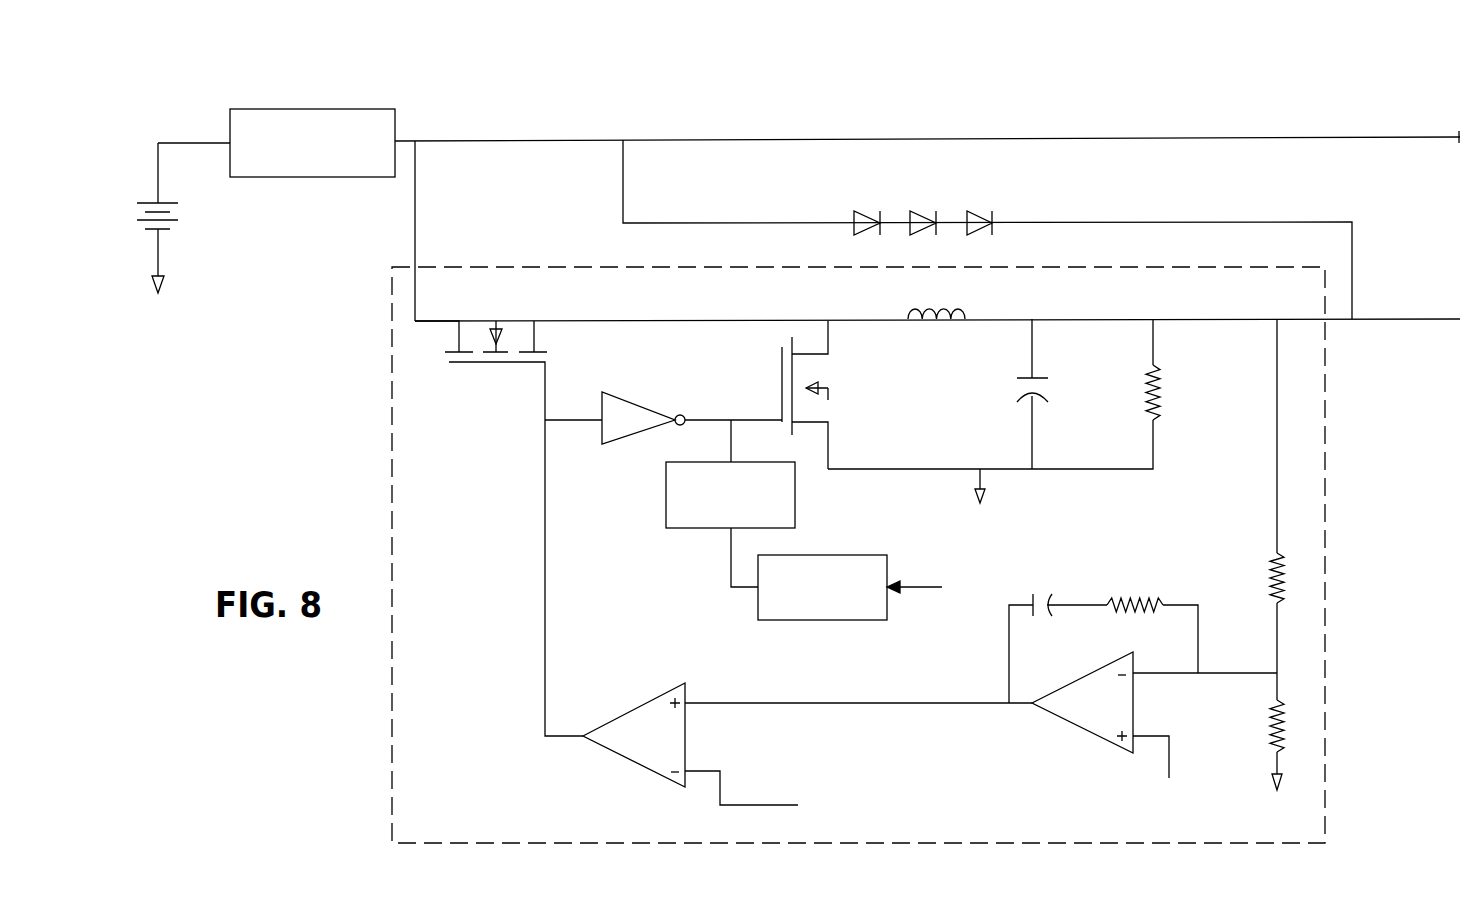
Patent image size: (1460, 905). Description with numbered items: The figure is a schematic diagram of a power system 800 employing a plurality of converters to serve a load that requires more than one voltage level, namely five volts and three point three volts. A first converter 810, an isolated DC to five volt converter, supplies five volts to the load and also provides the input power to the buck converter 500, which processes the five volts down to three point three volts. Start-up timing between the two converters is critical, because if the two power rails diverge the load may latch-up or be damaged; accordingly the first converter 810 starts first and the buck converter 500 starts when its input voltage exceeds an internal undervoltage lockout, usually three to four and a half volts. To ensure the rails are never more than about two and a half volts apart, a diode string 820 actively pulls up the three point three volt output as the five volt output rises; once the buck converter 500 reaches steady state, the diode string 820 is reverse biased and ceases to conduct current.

The power system 800 is at (508, 92).
The first converter 810 is at (300, 108).
The diode string 820 is at (1018, 133).
The buck converter 500 is at (392, 386).